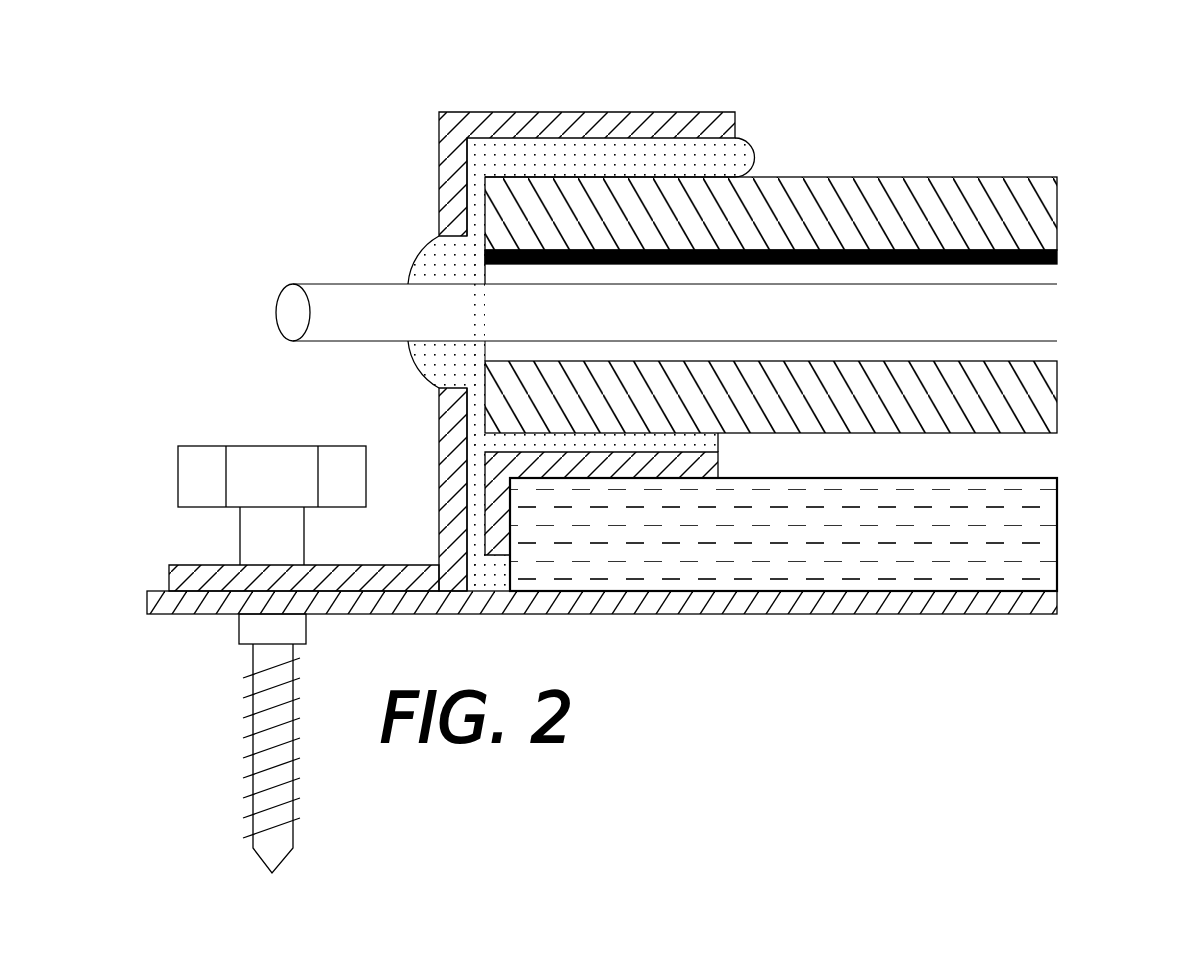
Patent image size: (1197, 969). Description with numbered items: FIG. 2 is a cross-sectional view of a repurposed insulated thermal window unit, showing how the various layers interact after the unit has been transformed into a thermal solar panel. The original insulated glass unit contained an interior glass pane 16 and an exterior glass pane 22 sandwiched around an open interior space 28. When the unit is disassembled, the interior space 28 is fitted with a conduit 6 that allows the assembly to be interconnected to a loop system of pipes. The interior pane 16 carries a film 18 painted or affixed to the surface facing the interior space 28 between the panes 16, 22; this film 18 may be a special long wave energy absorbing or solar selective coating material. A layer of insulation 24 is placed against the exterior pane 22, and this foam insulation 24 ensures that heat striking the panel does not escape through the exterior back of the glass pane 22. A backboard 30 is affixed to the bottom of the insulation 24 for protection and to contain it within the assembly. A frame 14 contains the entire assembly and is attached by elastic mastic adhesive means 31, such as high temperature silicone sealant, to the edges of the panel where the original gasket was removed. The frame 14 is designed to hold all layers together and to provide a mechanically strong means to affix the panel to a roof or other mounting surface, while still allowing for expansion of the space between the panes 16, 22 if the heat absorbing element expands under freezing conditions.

The frame 14 is at (438, 112).
The elastic mastic adhesive means 31 is at (448, 260).
The conduit 6 is at (295, 285).
The interior glass pane 16 is at (1055, 208).
The film 18 is at (1057, 256).
The interior space 28 is at (1035, 352).
The exterior glass pane 22 is at (1057, 413).
The insulation 24 is at (1057, 560).
The backboard 30 is at (1050, 606).